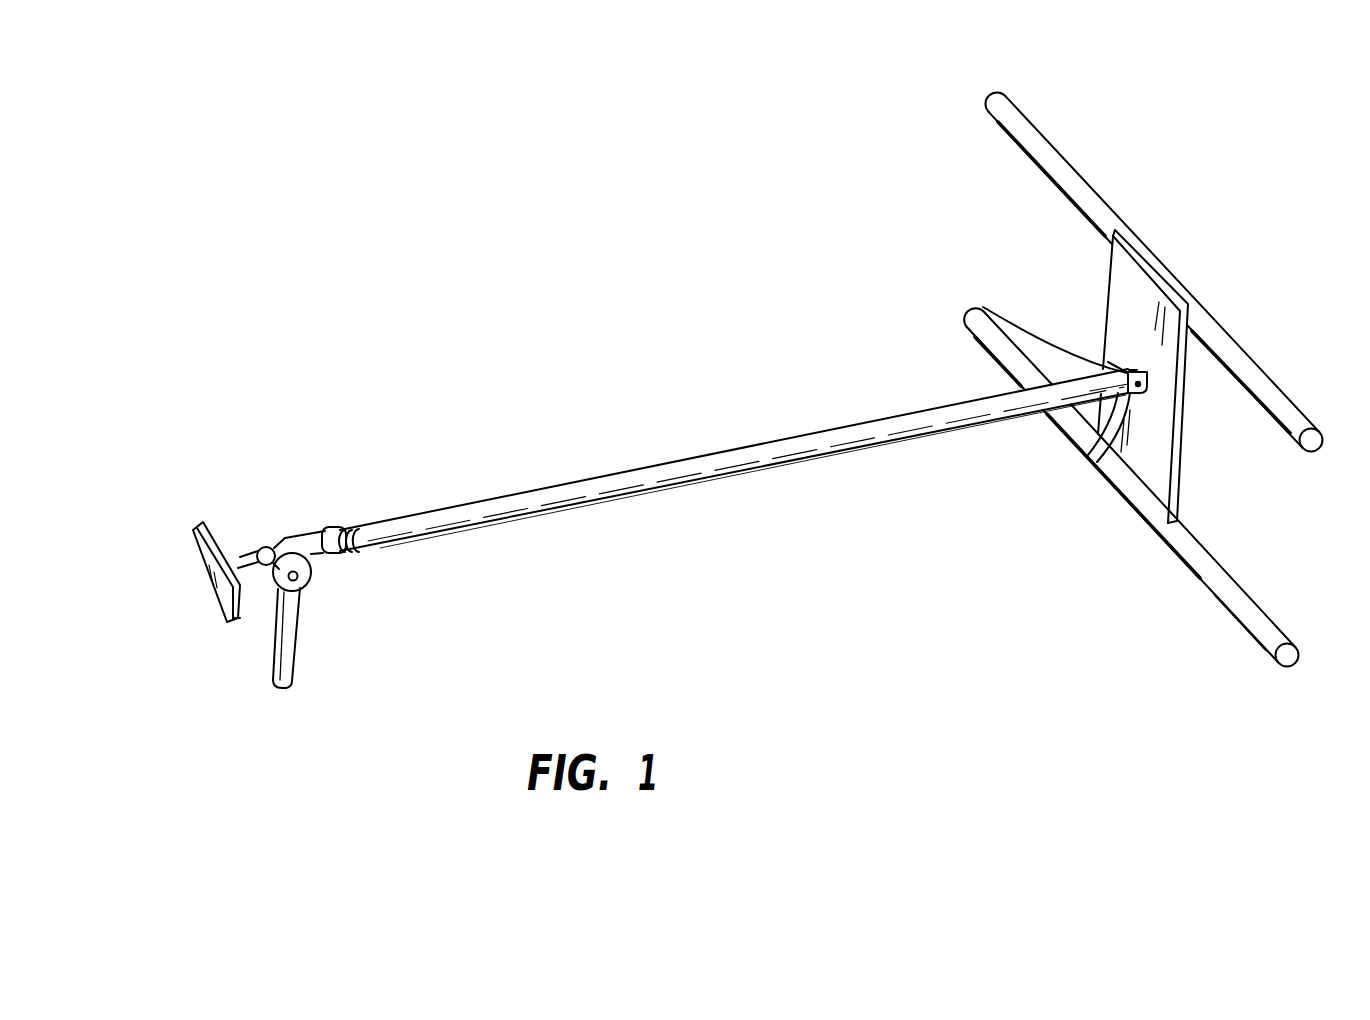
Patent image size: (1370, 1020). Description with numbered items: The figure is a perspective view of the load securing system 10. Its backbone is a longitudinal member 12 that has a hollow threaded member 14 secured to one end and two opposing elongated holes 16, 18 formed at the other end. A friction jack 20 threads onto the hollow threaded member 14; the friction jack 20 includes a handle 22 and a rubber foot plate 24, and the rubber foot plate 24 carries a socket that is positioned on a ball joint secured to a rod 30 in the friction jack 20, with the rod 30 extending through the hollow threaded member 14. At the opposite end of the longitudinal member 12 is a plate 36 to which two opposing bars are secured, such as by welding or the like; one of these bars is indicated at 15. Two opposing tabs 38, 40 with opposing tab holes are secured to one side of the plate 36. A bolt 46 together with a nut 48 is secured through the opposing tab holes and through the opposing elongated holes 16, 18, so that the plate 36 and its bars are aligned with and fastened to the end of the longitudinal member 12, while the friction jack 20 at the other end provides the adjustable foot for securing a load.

The load securing system 10 is at (767, 338).
The longitudinal member 12 is at (847, 455).
The hollow threaded member 14 is at (346, 527).
The lower rail 15 is at (1266, 610).
The elongated hole 16 is at (1181, 284).
The elongated hole 18 is at (1010, 372).
The friction jack 20 is at (308, 532).
The handle 22 is at (303, 622).
The rubber foot plate 24 is at (191, 560).
The rod 30 is at (256, 555).
The plate 36 is at (1164, 457).
The tab 38 is at (1117, 364).
The tab 40 is at (1147, 390).
The bolt 46 is at (1093, 450).
The nut 48 is at (1131, 366).